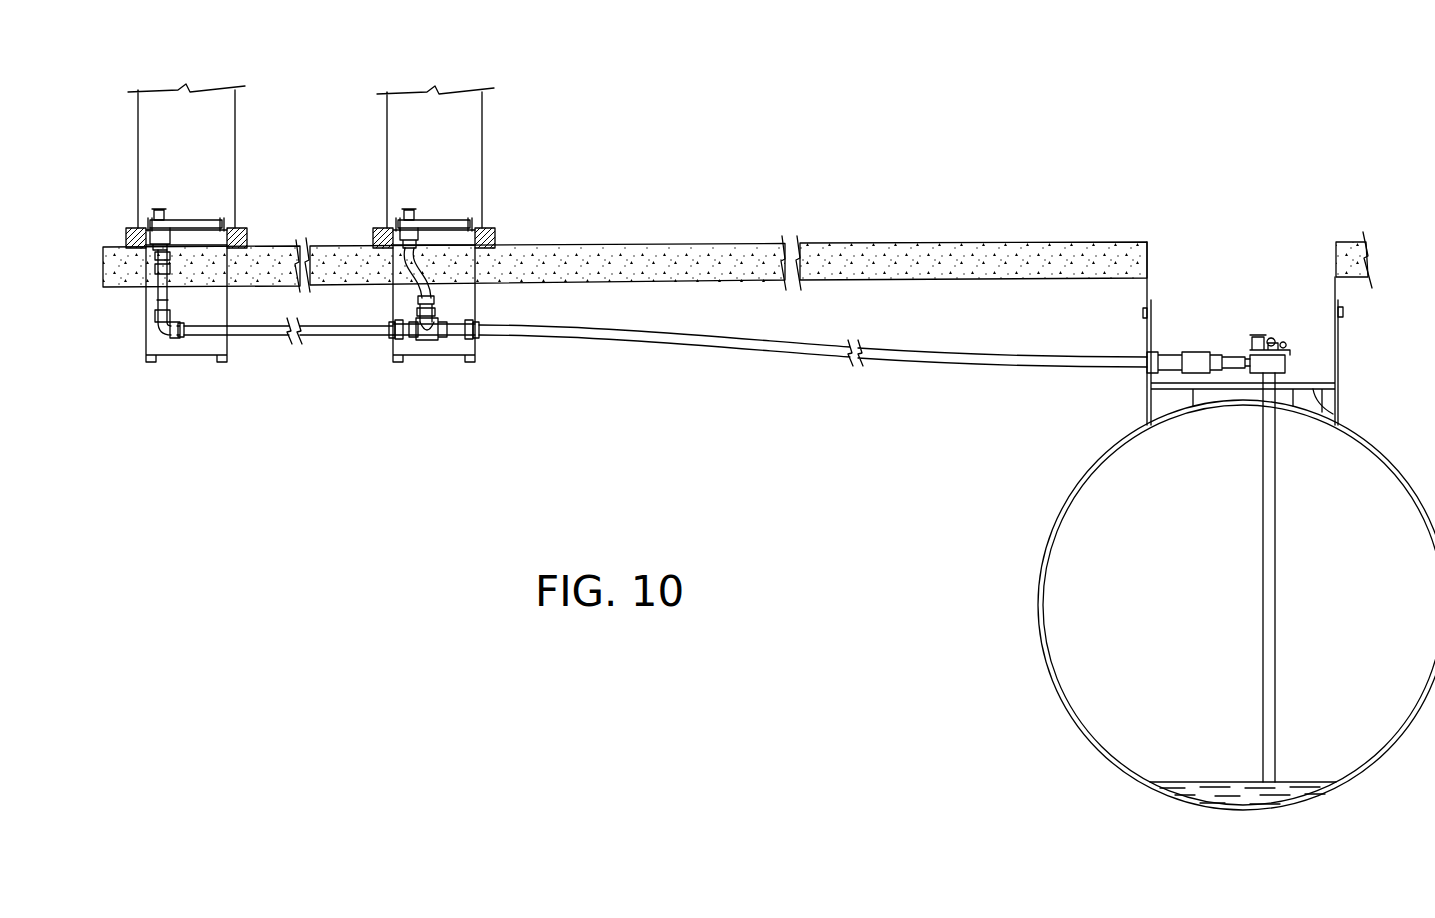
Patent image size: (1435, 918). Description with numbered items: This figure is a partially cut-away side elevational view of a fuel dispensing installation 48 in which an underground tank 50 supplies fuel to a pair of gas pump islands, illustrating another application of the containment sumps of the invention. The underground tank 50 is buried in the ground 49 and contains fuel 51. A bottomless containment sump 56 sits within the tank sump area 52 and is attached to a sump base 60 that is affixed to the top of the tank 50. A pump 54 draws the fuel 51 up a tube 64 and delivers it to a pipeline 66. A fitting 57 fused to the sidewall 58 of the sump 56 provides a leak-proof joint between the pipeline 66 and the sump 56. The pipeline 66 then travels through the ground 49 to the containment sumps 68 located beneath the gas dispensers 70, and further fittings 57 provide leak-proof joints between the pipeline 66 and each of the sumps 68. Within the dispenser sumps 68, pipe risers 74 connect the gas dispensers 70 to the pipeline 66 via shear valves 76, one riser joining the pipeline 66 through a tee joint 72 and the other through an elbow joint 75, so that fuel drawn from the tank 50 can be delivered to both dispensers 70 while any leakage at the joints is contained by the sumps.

The fuel dispensing system 48 is at (800, 199).
The ground 49 is at (937, 317).
The underground tank 50 is at (1042, 547).
The fuel 51 is at (1262, 795).
The tank sump 52 is at (1236, 268).
The pump 54 is at (1272, 338).
The bottomless containment sump 56 is at (1145, 335).
The fitting 57 is at (233, 338).
The sidewall 58 is at (1340, 347).
The sump base 60 is at (325, 332).
The tube 64 is at (1266, 580).
The pipeline 66 is at (690, 332).
The containment sump 68 is at (144, 350).
The gas dispenser 70 is at (220, 132).
The tee joint 72 is at (436, 343).
The pipe riser 74 is at (163, 294).
The elbow joint 75 is at (160, 338).
The shear valve 76 is at (150, 215).